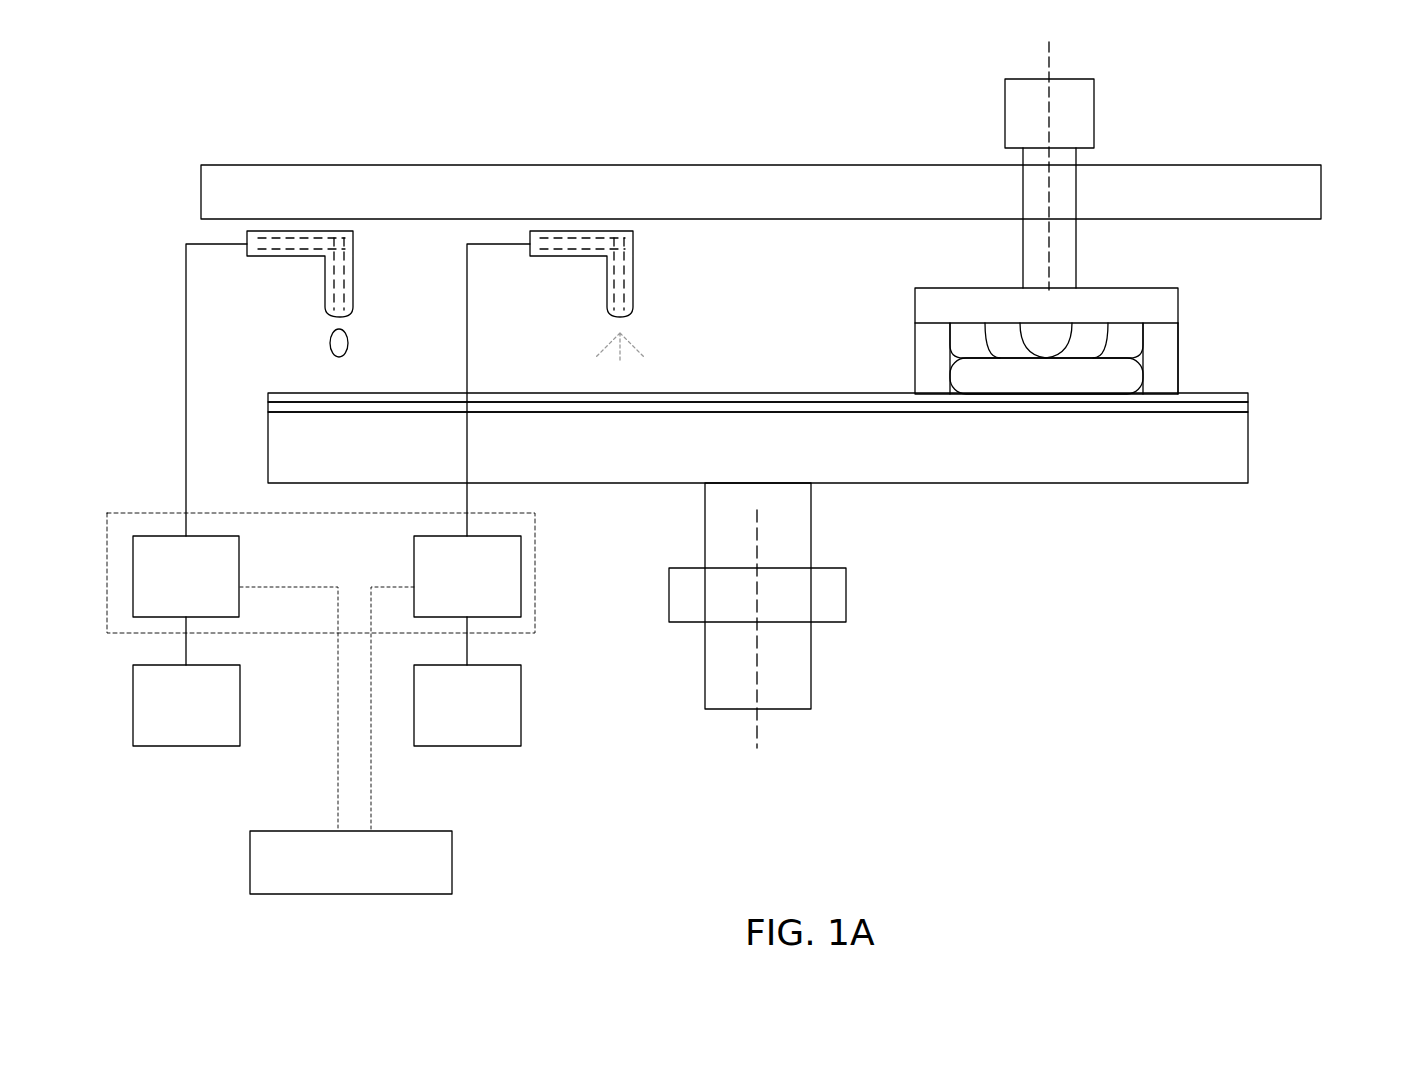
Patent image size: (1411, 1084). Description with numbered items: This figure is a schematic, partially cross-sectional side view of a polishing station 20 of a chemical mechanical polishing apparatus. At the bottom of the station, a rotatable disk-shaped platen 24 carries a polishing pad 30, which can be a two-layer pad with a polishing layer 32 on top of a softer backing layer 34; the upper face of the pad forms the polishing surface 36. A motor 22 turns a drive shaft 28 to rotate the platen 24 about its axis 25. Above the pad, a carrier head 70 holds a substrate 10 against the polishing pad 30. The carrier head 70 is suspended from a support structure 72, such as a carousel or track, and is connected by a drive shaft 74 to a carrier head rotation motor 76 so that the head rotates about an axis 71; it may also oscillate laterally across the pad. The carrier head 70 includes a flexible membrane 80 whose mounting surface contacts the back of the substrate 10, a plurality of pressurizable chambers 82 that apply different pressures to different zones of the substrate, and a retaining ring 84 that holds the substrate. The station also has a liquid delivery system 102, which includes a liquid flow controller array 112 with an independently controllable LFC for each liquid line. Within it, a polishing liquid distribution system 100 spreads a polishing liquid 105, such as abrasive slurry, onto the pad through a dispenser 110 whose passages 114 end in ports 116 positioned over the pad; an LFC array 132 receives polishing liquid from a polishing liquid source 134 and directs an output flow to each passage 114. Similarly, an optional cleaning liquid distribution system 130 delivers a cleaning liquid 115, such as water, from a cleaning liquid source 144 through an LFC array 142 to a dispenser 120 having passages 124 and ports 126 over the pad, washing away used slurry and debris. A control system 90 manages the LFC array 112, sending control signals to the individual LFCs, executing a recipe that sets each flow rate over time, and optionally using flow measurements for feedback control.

The polishing station 20 is at (297, 130).
The liquid delivery system 102 is at (562, 792).
The polishing liquid distribution system 100 is at (165, 262).
The support structure 72 is at (1290, 165).
The cleaning liquid distribution system 130 is at (745, 247).
The carrier head 70 is at (902, 313).
The axis 71 is at (1052, 61).
The carrier head rotation motor 76 is at (1002, 127).
The drive shaft 74 is at (1035, 267).
The flexible membrane 80 is at (1105, 338).
The pressurizable chambers 82 is at (1046, 340).
The substrate 10 is at (1046, 376).
The retaining ring 84 is at (1178, 378).
The polishing pad 30 is at (1328, 389).
The polishing layer 32 is at (1248, 397).
The backing layer 34 is at (1248, 407).
The polishing surface 36 is at (793, 394).
The platen 24 is at (1248, 447).
The drive shaft 28 is at (811, 520).
The motor 22 is at (846, 590).
The axis 25 is at (757, 730).
The dispenser 110 is at (325, 276).
The passages 114 is at (352, 272).
The ports 116 is at (350, 312).
The polishing liquid 105 is at (337, 357).
The dispenser 120 is at (607, 276).
The passages 124 is at (632, 272).
The ports 126 is at (630, 312).
The cleaning liquid 115 is at (618, 362).
The liquid flow controller array 112 is at (536, 605).
The liquid flow controller array 132 is at (240, 578).
The liquid flow controller array 142 is at (521, 578).
The polishing liquid source 134 is at (240, 704).
The cleaning liquid source 144 is at (521, 704).
The control system 90 is at (350, 894).